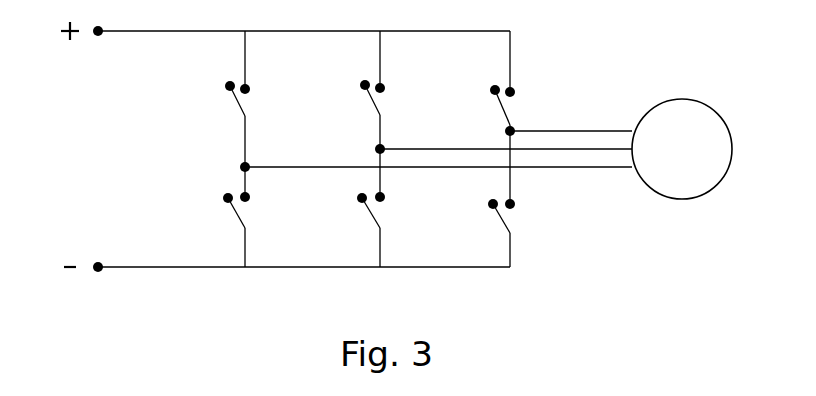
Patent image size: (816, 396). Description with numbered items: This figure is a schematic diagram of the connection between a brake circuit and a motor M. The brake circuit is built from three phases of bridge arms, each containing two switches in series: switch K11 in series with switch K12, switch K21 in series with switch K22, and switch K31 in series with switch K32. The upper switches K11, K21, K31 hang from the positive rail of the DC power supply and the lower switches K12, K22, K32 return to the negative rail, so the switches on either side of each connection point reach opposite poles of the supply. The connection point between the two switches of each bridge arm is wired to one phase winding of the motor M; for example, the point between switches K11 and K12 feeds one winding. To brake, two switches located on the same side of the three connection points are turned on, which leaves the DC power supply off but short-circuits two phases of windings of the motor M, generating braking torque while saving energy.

The switch K31 is at (272, 92).
The switch K21 is at (408, 92).
The switch K11 is at (539, 97).
The switch K32 is at (270, 211).
The switch K22 is at (407, 211).
The switch K12 is at (540, 213).
The motor M is at (682, 149).